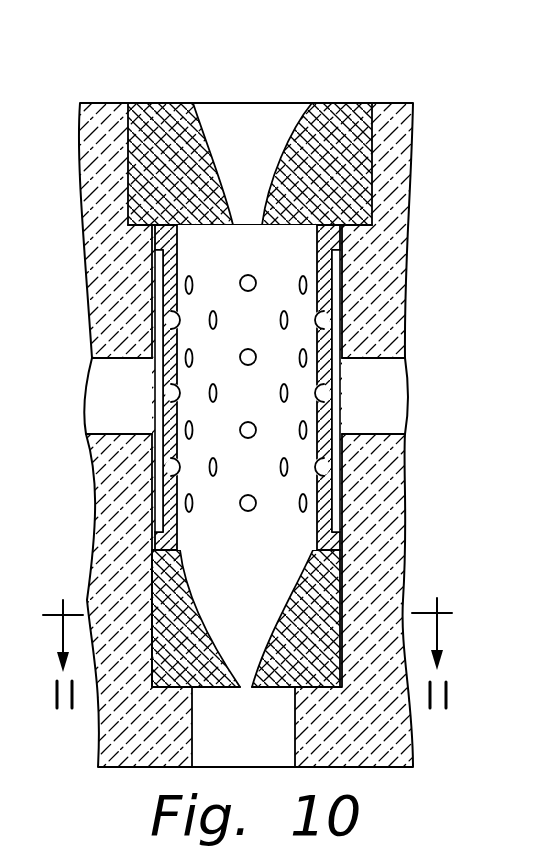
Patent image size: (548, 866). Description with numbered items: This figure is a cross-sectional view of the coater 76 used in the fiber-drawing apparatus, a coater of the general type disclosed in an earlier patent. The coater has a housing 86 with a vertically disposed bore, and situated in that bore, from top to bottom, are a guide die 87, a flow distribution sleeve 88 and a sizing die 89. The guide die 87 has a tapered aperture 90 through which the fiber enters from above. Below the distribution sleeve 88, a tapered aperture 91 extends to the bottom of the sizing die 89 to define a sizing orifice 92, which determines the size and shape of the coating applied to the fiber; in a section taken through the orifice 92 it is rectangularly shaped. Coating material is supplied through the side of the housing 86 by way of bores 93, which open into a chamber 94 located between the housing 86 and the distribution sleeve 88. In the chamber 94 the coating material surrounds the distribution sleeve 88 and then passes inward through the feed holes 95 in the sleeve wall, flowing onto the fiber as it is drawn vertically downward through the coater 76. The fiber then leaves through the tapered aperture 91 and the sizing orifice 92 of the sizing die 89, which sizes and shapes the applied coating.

The coater 76 is at (414, 490).
The housing 86 is at (392, 738).
The guide die 87 is at (167, 122).
The flow distribution sleeve 88 is at (322, 274).
The sizing die 89 is at (175, 592).
The tapered aperture 90 is at (205, 134).
The tapered aperture 91 is at (280, 616).
The sizing orifice 92 is at (244, 680).
The bores 93 is at (110, 434).
The chamber 94 is at (156, 263).
The feed holes 95 is at (311, 320).